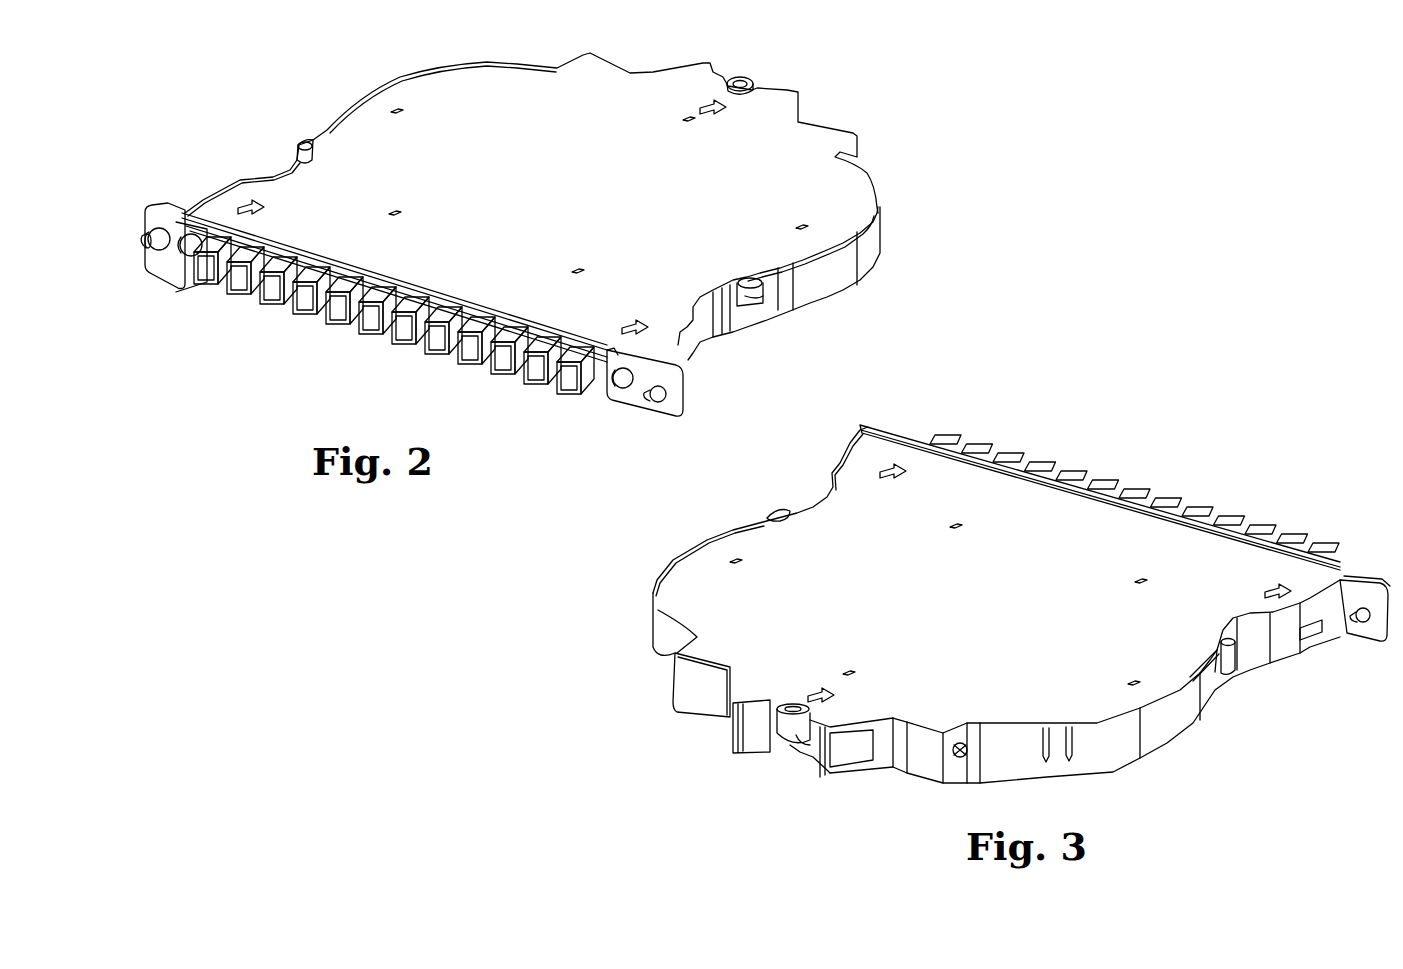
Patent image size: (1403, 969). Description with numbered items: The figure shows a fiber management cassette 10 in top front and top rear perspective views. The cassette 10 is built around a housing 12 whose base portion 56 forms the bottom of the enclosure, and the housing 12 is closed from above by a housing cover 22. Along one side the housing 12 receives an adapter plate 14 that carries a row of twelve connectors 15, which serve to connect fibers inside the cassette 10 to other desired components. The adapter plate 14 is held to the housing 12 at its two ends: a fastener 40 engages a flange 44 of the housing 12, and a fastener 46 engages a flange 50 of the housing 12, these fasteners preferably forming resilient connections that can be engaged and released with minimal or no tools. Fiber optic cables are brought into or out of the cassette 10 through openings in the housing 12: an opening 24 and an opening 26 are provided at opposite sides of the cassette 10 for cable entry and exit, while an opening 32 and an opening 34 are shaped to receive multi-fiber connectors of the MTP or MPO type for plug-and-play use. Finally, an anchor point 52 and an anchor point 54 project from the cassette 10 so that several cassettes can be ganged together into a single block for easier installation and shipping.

In FIG. 2, the fiber management cassette 10 is at (471, 428).
In FIG. 3, the fiber management cassette 10 is at (1218, 735).
In FIG. 2, the housing 12 is at (842, 298).
In FIG. 3, the housing 12 is at (1135, 755).
In FIG. 2, the adapter plate 14 is at (357, 360).
In FIG. 3, the adapter plate 14 is at (1175, 497).
In FIG. 2, the connectors 15 is at (268, 318).
In FIG. 3, the connectors 15 is at (960, 443).
In FIG. 2, the housing cover 22 is at (571, 170).
In FIG. 3, the housing cover 22 is at (1031, 620).
In FIG. 3, the opening 24 is at (965, 760).
In FIG. 3, the opening 26 is at (665, 693).
In FIG. 3, the opening 32 is at (850, 762).
In FIG. 3, the opening 34 is at (730, 735).
In FIG. 2, the fastener 40 is at (186, 262).
In FIG. 2, the flange 44 is at (160, 255).
In FIG. 2, the fastener 46 is at (622, 392).
In FIG. 2, the flange 50 is at (665, 412).
In FIG. 2, the anchor point 52 is at (298, 148).
In FIG. 3, the anchor point 52 is at (1238, 665).
In FIG. 2, the anchor point 54 is at (752, 80).
In FIG. 3, the anchor point 54 is at (805, 740).
In FIG. 2, the base portion 56 is at (762, 305).
In FIG. 3, the base portion 56 is at (780, 508).